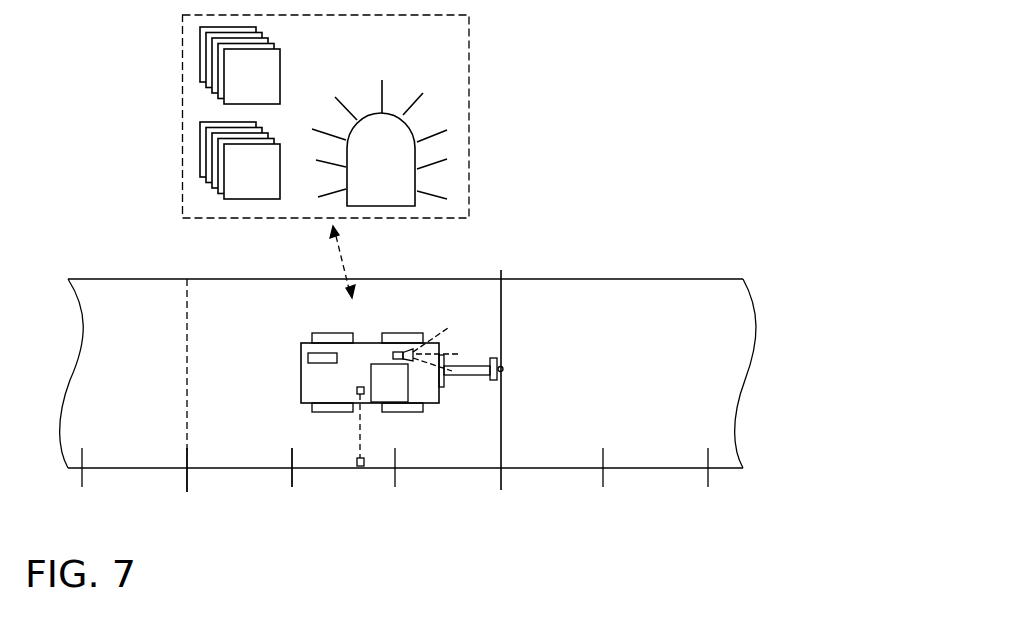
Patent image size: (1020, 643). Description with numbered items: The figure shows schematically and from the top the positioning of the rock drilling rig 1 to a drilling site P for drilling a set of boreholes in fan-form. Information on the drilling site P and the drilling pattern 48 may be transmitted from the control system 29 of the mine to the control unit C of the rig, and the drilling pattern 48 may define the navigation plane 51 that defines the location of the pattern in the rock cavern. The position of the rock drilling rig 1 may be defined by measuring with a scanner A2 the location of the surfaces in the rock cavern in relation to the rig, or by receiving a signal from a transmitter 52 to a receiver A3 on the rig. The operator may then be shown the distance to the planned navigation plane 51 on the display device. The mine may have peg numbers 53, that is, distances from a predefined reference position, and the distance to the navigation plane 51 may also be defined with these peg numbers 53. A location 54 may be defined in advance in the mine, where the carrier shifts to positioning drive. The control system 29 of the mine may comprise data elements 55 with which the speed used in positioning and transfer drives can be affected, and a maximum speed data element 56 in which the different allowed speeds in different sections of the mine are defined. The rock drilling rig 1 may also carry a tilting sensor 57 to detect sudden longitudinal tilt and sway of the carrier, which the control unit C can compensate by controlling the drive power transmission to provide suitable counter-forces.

The rock drilling rig 1 is at (369, 353).
The control system 29 is at (469, 57).
The drilling pattern 48 is at (400, 177).
The navigation plane 51 is at (502, 320).
The transmitter 52 is at (357, 470).
The peg numbers 53 is at (288, 473).
The location 54 is at (187, 387).
The data elements 55 is at (240, 74).
The maximum speed data element 56 is at (238, 178).
The tilting sensor 57 is at (313, 353).
The scanner A2 is at (398, 352).
The receiver A3 is at (357, 390).
The drilling site P is at (390, 314).
The control unit C is at (400, 395).